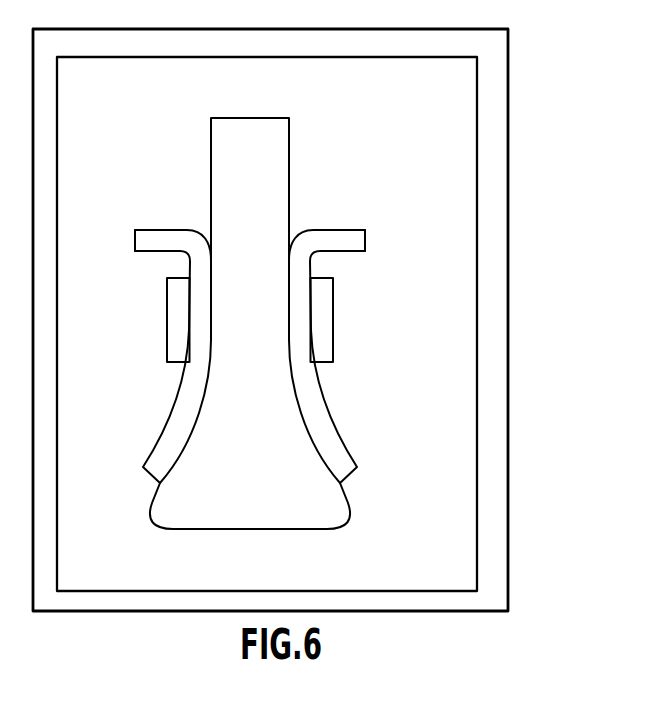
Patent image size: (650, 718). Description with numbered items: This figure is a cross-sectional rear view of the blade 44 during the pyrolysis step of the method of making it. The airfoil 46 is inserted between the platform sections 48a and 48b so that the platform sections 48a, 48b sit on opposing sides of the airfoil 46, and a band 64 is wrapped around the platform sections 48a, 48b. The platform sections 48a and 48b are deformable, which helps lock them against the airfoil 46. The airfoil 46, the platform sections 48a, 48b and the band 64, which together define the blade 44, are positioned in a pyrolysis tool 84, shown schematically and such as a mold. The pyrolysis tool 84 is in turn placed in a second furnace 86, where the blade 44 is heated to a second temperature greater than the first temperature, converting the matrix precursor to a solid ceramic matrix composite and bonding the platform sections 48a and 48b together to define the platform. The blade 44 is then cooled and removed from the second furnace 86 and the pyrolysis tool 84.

The blade 44 is at (364, 156).
The airfoil 46 is at (267, 207).
The platform section 48a is at (157, 243).
The platform section 48b is at (352, 243).
The band 64 is at (333, 318).
The pyrolysis tool 84 is at (477, 187).
The second furnace 86 is at (509, 249).